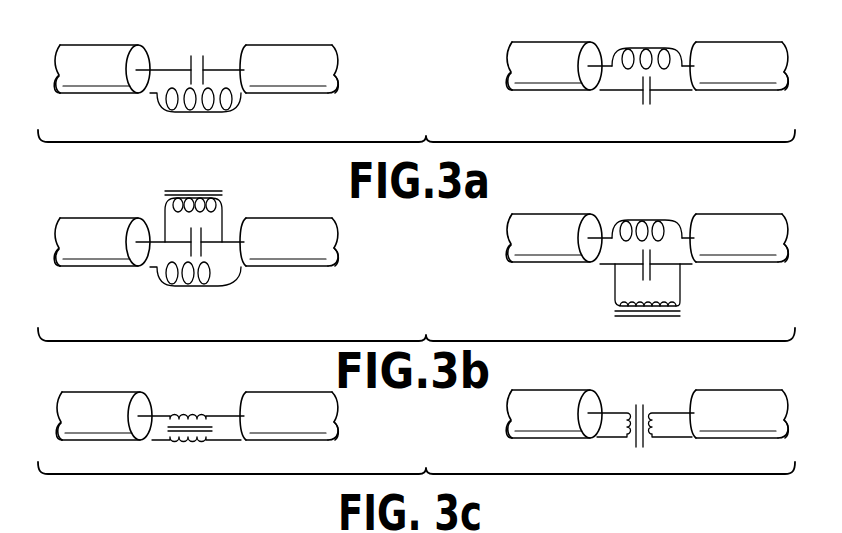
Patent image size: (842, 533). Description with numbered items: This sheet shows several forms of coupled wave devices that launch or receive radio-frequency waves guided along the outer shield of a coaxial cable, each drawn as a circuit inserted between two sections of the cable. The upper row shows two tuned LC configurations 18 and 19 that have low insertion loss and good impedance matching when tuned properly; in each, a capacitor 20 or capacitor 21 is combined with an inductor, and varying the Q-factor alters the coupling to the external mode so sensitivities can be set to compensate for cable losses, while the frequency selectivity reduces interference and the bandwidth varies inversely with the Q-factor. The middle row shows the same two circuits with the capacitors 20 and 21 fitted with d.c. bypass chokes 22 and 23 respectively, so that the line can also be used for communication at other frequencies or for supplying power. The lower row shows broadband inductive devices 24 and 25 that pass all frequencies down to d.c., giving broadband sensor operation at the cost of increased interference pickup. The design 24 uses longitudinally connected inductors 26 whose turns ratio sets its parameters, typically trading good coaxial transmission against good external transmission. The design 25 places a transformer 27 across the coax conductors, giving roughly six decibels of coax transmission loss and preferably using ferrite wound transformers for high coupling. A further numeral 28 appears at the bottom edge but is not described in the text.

In FIG. 3a, the tuned LC configuration 18 is at (190, 59).
In FIG. 3a, the tuned LC configuration 19 is at (649, 42).
In FIG. 3a, the capacitor 20 is at (189, 57).
In FIG. 3b, the capacitor 20 is at (201, 232).
In FIG. 3a, the capacitor 21 is at (652, 99).
In FIG. 3b, the capacitor 21 is at (636, 268).
In FIG. 3b, the d.c. bypass choke 22 is at (190, 191).
In FIG. 3b, the d.c. bypass choke 23 is at (664, 318).
In FIG. 3c, the broadband inductive CWD 24 is at (195, 415).
In FIG. 3c, the broadband inductive CWD 25 is at (636, 411).
In FIG. 3c, the longitudinally connected inductors 26 is at (214, 428).
In FIG. 3c, the transformer 27 is at (633, 441).
In FIG. 3c, the circuit element 28 is at (207, 527).